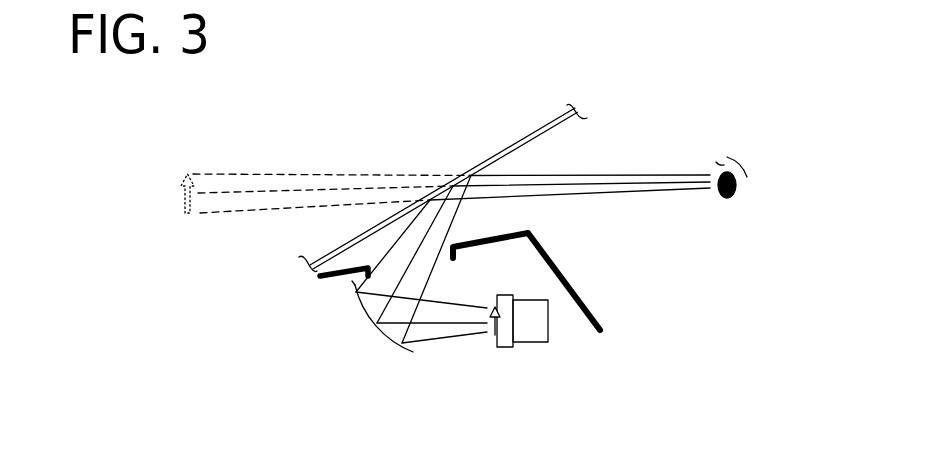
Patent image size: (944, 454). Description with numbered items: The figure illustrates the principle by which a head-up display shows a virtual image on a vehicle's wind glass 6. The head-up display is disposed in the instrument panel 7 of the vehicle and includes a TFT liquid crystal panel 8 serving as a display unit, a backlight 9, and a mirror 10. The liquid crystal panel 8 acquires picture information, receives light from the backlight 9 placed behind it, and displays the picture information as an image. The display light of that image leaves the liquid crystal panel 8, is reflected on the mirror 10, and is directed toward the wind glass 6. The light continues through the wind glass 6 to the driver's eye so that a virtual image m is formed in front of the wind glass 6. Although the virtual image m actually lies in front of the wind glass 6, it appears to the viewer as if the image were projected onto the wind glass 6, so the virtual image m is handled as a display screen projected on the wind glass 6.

The virtual image m is at (183, 206).
The wind glass 6 is at (527, 133).
The instrument panel 7 is at (556, 261).
The TFT liquid crystal panel 8 is at (503, 347).
The backlight 9 is at (532, 342).
The mirror 10 is at (383, 337).